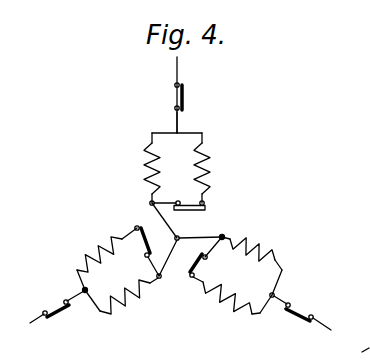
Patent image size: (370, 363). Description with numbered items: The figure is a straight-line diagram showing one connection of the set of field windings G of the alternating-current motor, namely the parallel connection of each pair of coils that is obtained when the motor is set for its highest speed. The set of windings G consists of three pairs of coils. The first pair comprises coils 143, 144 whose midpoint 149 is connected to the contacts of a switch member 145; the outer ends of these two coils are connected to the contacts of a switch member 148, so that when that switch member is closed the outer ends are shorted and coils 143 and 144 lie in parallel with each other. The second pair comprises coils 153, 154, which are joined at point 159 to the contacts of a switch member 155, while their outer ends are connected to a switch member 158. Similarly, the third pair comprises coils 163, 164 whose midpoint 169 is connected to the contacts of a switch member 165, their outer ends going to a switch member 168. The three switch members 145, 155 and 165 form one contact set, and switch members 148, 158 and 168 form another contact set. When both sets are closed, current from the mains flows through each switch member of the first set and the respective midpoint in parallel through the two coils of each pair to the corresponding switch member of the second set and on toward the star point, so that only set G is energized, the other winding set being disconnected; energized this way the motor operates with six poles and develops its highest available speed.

The coil 143 is at (146, 167).
The coil 144 is at (209, 166).
The switch member 145 is at (181, 100).
The switch member 148 is at (198, 210).
The midpoint 149 is at (180, 130).
The set of field windings G is at (229, 204).
The coil 153 is at (130, 299).
The coil 154 is at (108, 243).
The switch member 155 is at (58, 313).
The switch member 158 is at (144, 248).
The connection point 159 is at (83, 289).
The coil 163 is at (280, 250).
The coil 164 is at (226, 304).
The switch member 165 is at (293, 312).
The switch member 168 is at (194, 270).
The midpoint 169 is at (275, 295).